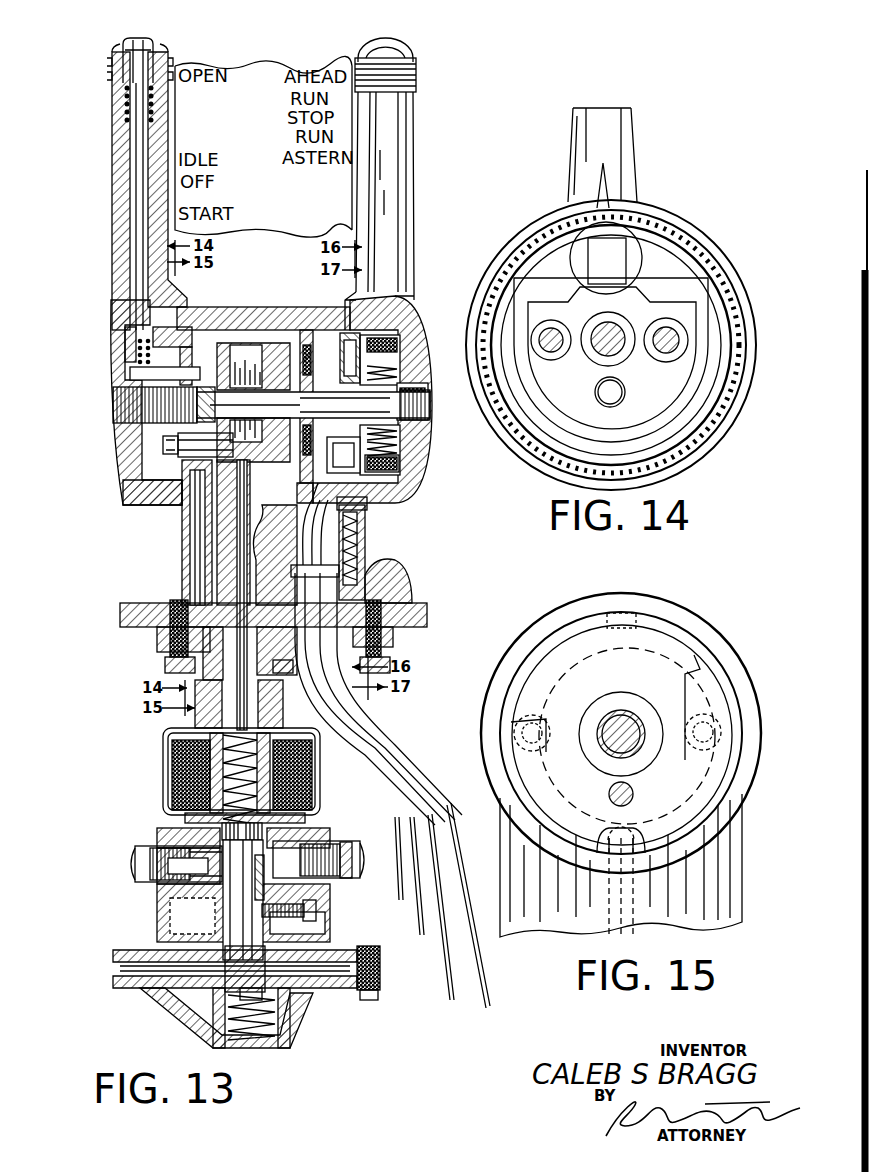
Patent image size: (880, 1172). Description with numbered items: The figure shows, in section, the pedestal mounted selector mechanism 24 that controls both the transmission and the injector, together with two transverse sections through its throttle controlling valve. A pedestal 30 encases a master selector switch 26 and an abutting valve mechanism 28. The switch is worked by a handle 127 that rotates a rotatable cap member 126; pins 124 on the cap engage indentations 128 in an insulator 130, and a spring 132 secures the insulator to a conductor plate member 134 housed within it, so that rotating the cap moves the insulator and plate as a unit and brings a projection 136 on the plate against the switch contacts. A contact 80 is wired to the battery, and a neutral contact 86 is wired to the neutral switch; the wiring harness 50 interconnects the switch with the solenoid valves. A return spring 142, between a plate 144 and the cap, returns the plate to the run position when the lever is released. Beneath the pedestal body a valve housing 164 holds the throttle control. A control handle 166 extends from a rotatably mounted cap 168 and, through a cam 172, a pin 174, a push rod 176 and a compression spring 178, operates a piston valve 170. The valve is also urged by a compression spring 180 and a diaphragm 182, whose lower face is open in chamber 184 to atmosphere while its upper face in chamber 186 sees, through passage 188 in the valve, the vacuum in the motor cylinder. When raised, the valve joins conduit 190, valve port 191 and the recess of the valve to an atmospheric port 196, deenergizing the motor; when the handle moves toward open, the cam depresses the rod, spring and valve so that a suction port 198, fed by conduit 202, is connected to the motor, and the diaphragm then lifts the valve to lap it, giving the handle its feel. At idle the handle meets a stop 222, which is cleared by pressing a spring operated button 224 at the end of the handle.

In FIG. 13, the spring operated button 224 is at (150, 57).
In FIG. 13, the selector mechanism 24 is at (414, 124).
In FIG. 13, the handle 127 is at (398, 192).
In FIG. 13, the control handle 166 is at (118, 185).
In FIG. 14, the control handle 166 is at (618, 133).
In FIG. 13, the stop 222 is at (200, 345).
In FIG. 13, the pedestal 30 is at (268, 322).
In FIG. 15, the pedestal 30 is at (735, 682).
In FIG. 13, the contact 80 is at (312, 335).
In FIG. 13, the spring 132 is at (366, 340).
In FIG. 13, the master selector switch 26 is at (382, 336).
In FIG. 13, the insulator 130 is at (386, 348).
In FIG. 13, the indentations 128 is at (392, 360).
In FIG. 13, the pins 124 is at (396, 375).
In FIG. 13, the return spring 142 is at (427, 398).
In FIG. 13, the plate 144 is at (427, 410).
In FIG. 13, the rotatable cap member 126 is at (400, 436).
In FIG. 13, the conductor plate member 134 is at (398, 466).
In FIG. 13, the projection 136 is at (360, 470).
In FIG. 13, the valve mechanism 28 is at (205, 358).
In FIG. 15, the valve mechanism 28 is at (661, 650).
In FIG. 13, the pin 174 is at (122, 410).
In FIG. 14, the pin 174 is at (610, 396).
In FIG. 13, the rotatably mounted cap 168 is at (128, 455).
In FIG. 14, the rotatably mounted cap 168 is at (692, 240).
In FIG. 13, the cam 172 is at (165, 480).
In FIG. 15, the cam 172 is at (740, 808).
In FIG. 13, the neutral contact 86 is at (352, 526).
In FIG. 13, the push rod 176 is at (233, 548).
In FIG. 15, the push rod 176 is at (624, 904).
In FIG. 13, the wiring harness 50 is at (380, 742).
In FIG. 13, the compression spring 178 is at (165, 760).
In FIG. 13, the atmospheric port 196 is at (277, 823).
In FIG. 13, the valve port 191 is at (282, 863).
In FIG. 13, the conduit 190 is at (296, 860).
In FIG. 13, the passage 188 is at (332, 868).
In FIG. 13, the valve housing 164 is at (160, 840).
In FIG. 13, the conduit 202 is at (142, 872).
In FIG. 13, the suction port 198 is at (215, 878).
In FIG. 13, the piston valve 170 is at (238, 897).
In FIG. 13, the chamber 186 is at (335, 945).
In FIG. 13, the diaphragm 182 is at (335, 957).
In FIG. 13, the chamber 184 is at (347, 985).
In FIG. 13, the compression spring 180 is at (287, 1014).